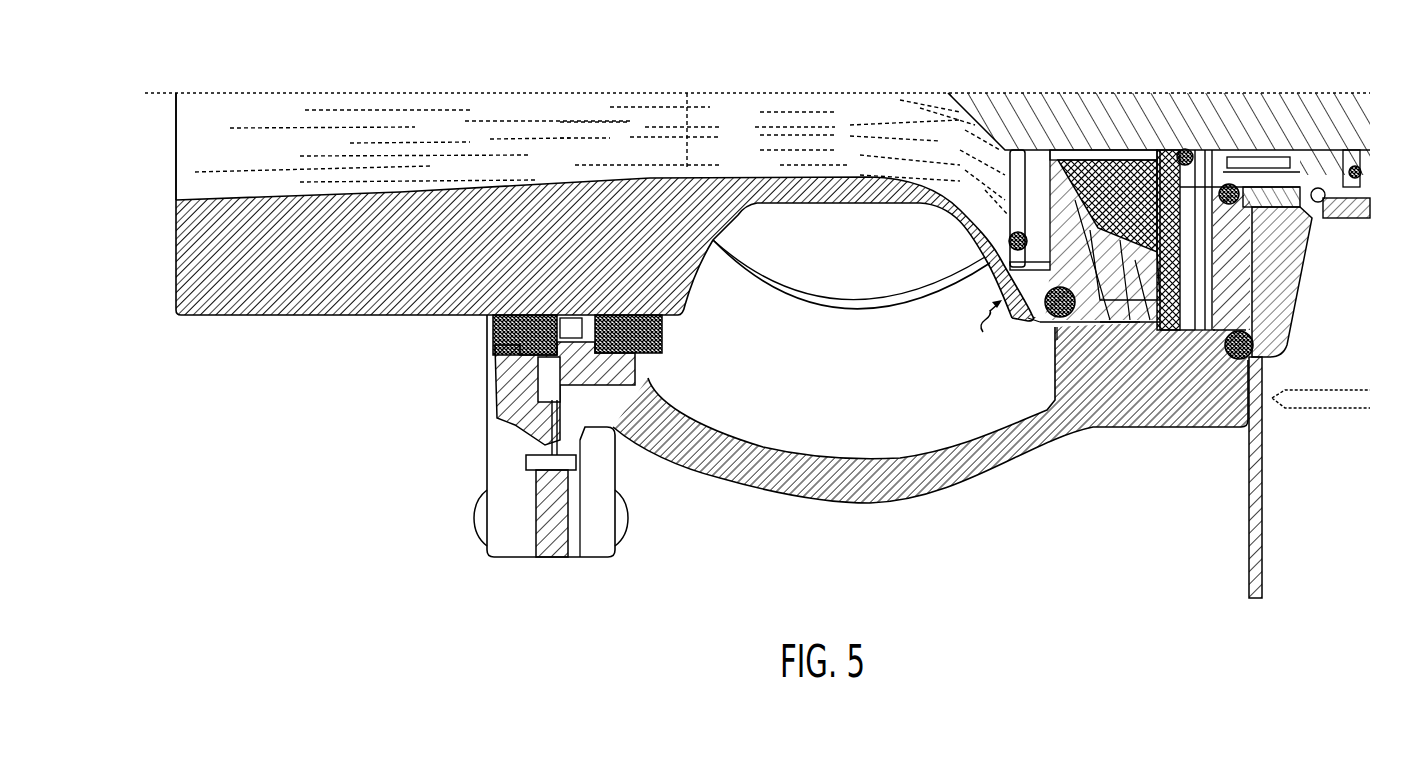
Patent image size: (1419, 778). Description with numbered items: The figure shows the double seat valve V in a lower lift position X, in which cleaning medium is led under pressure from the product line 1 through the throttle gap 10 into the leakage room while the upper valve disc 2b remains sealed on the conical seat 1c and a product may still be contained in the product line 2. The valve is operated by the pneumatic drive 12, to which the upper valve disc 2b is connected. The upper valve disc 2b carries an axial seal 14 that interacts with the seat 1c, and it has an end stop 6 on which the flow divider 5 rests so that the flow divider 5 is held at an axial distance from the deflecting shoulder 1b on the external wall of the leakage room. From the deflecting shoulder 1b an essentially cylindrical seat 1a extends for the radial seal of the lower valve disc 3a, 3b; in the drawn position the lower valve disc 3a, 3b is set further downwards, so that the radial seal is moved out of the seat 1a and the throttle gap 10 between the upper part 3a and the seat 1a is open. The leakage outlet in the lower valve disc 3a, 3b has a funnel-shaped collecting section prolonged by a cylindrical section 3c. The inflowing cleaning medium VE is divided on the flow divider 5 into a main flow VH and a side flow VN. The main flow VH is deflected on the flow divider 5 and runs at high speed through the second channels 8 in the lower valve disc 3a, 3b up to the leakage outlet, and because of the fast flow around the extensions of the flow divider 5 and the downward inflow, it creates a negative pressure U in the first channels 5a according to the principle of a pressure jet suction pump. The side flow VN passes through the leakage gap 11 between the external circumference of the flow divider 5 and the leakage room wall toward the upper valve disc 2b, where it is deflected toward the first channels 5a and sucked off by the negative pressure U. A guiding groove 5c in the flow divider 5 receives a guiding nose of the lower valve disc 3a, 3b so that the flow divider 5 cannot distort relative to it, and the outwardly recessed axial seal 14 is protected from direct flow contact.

The product line 1 is at (768, 366).
The seat 1a is at (1140, 323).
The deflecting shoulder 1b is at (1180, 323).
The seat 1c is at (1216, 312).
The product line 2 is at (1291, 472).
The upper valve disc 2b is at (1232, 292).
The lower valve disc 3a is at (1003, 280).
The lower valve disc 3b is at (992, 286).
The cylindrical section 3c is at (830, 143).
The flow divider 5 is at (1090, 195).
The first channels 5a is at (1000, 243).
The guiding groove 5c is at (997, 221).
The end stop 6 is at (1315, 200).
The second channels 8 is at (1010, 272).
The throttle gap 10 is at (1048, 322).
The leakage gap 11 is at (1197, 323).
The pneumatic drive 12 is at (1213, 331).
The seal 14 is at (1250, 357).
The negative pressure U is at (1158, 150).
The double seat valve V is at (1259, 93).
The cleaning medium VE is at (1057, 330).
The main flow VH is at (1033, 312).
The side flow VN is at (1210, 325).
The lower lift position X is at (987, 331).